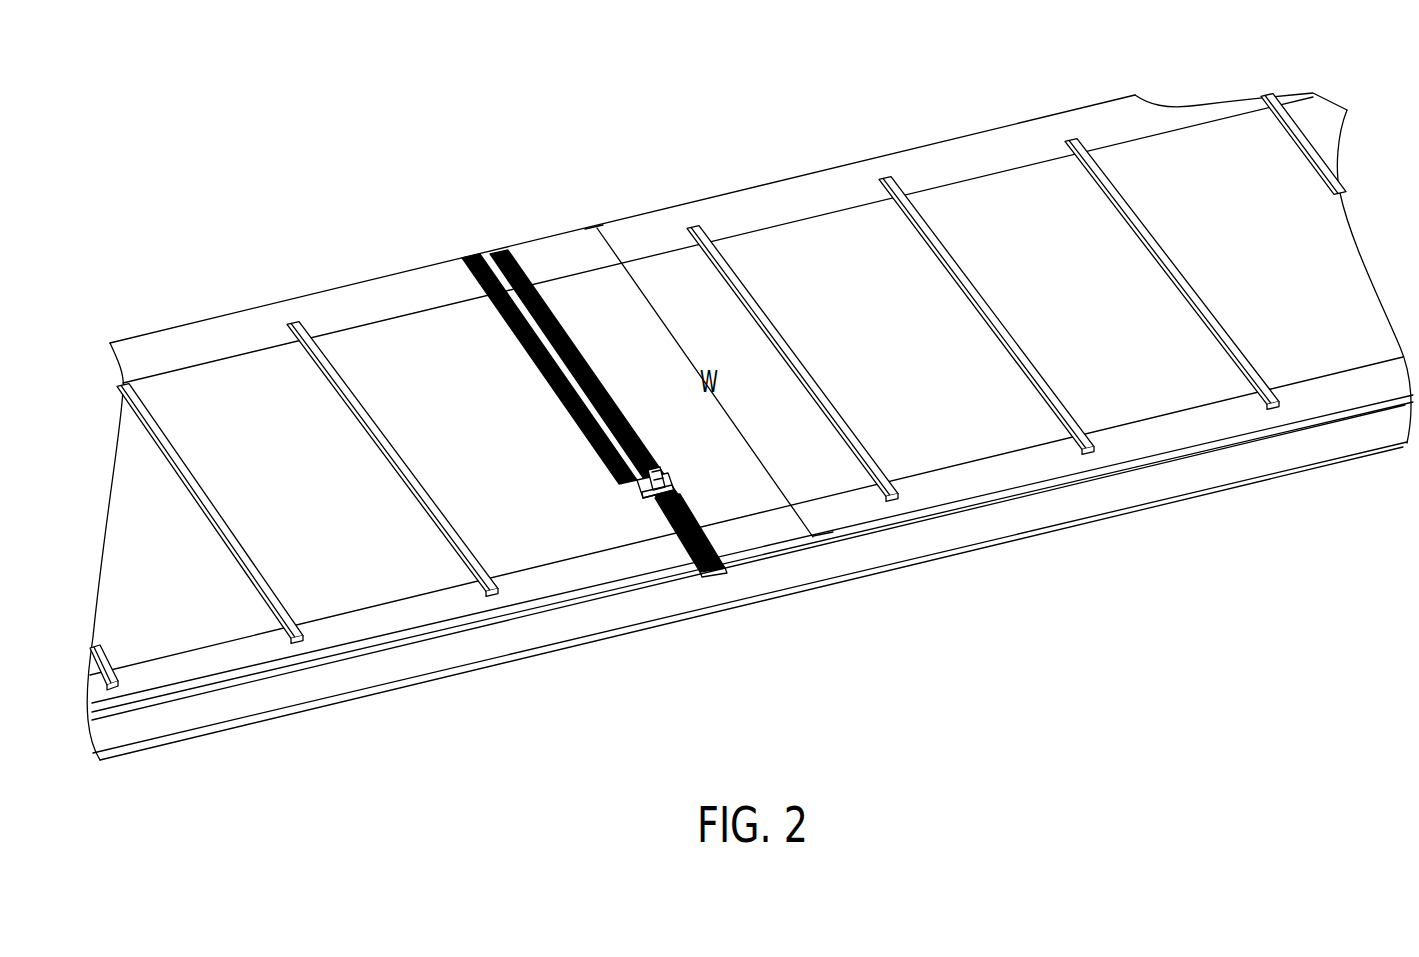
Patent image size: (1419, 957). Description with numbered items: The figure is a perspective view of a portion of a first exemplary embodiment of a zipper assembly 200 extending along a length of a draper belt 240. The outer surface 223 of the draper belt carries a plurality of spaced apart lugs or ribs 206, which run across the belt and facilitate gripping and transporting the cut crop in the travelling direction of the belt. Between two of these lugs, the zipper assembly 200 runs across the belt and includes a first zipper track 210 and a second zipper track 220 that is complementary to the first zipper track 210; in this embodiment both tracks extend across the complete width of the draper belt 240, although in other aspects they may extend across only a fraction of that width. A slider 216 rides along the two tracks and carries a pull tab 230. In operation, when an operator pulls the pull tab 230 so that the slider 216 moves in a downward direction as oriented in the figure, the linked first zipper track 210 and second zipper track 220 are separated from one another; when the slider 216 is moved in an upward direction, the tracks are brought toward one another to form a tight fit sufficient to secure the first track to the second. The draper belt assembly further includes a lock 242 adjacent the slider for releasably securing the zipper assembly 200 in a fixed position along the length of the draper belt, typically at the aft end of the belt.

The outer surface 223 is at (234, 372).
The lugs 206 is at (293, 320).
The draper belt 240 is at (528, 155).
The zipper assembly 200 is at (507, 228).
The second zipper track 220 is at (520, 333).
The first zipper track 210 is at (577, 347).
The pull tab 230 is at (650, 495).
The lock 242 is at (643, 478).
The slider 216 is at (650, 497).